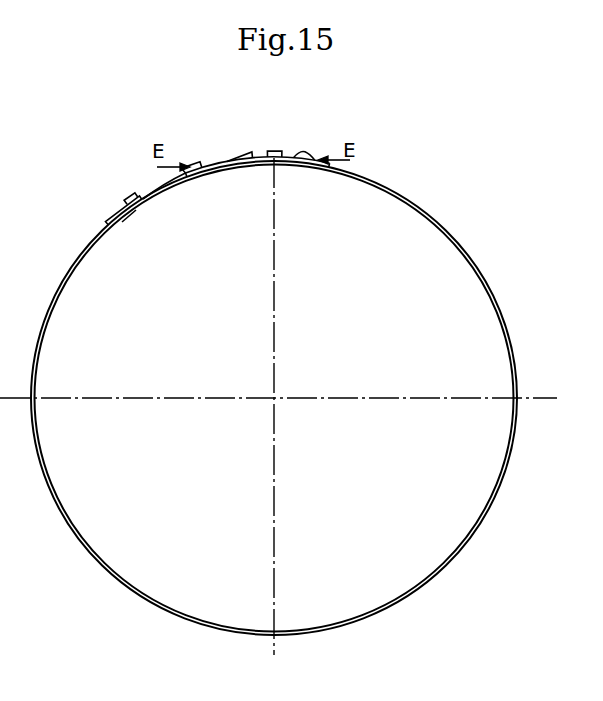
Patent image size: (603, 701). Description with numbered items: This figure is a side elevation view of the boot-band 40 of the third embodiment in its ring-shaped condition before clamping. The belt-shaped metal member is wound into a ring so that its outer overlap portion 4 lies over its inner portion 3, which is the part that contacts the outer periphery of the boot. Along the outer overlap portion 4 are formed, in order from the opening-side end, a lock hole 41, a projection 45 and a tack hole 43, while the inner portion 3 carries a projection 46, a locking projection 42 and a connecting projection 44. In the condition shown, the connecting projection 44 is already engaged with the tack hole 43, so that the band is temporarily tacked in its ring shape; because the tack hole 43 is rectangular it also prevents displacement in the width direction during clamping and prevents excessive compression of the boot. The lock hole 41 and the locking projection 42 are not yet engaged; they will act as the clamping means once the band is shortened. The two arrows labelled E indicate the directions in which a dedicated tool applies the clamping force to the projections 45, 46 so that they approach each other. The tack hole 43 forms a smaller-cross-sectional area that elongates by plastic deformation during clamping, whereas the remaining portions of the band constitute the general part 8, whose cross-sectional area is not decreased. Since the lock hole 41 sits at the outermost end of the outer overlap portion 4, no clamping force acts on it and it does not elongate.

The inner portion 3 is at (136, 208).
The outer overlap portion 4 is at (153, 187).
The general part 8 is at (478, 266).
The boot-band 40 is at (488, 207).
The lock hole 41 is at (232, 157).
The locking projection 42 is at (277, 151).
The tack hole 43 is at (113, 220).
The connecting projection 44 is at (130, 198).
The projection 45 is at (309, 156).
The projection 46 is at (196, 162).